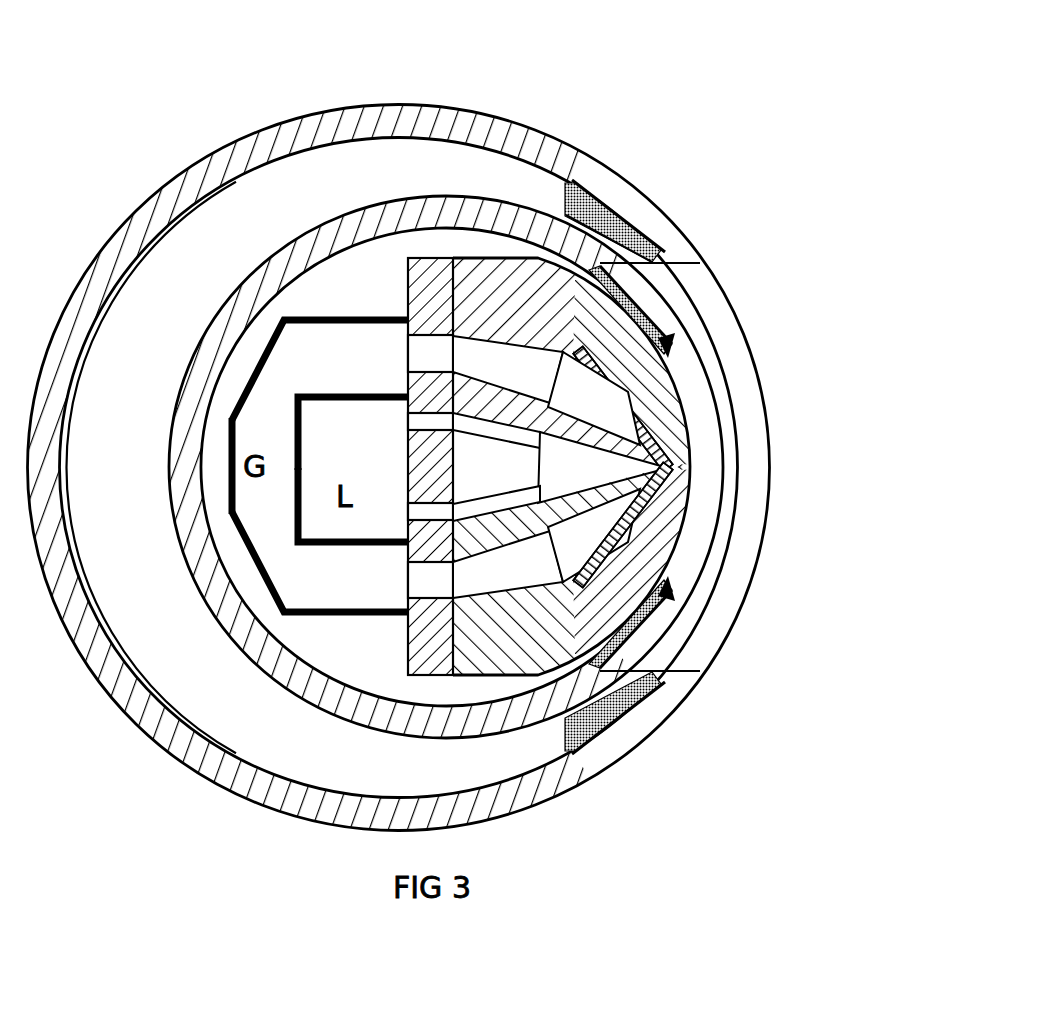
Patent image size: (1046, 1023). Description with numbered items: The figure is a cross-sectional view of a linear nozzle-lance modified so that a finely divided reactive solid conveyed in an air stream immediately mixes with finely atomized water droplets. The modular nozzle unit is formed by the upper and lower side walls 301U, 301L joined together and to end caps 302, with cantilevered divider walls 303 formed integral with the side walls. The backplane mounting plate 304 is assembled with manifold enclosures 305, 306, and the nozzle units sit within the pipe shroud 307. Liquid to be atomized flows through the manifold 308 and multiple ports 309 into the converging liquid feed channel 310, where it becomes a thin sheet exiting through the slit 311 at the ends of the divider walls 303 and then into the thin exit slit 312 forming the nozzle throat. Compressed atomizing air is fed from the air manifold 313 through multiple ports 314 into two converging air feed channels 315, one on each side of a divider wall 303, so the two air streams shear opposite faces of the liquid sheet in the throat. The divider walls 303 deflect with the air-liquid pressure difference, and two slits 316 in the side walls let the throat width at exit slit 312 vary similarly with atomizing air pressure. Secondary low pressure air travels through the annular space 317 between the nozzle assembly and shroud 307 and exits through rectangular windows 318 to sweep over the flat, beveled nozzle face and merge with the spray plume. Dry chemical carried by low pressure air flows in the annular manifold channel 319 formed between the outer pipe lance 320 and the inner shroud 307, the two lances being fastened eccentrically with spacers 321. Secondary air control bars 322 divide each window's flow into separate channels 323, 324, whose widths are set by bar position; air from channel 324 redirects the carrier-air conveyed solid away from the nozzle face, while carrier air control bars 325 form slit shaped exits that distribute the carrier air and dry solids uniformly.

The upper side wall 301U is at (576, 363).
The lower side wall 301L is at (576, 571).
The end caps 302 is at (490, 250).
The divider walls 303 is at (692, 466).
The backplane mounting plate 304 is at (406, 295).
The manifold enclosure 305 is at (400, 392).
The manifold enclosure 306 is at (400, 598).
The pipe shroud 307 is at (172, 412).
The liquid manifold 308 is at (353, 479).
The multiple ports 309 is at (496, 433).
The converging liquid feed channel 310 is at (603, 467).
The slit 311 is at (687, 483).
The exit slit 312 is at (670, 472).
The air manifold 313 is at (320, 370).
The multiple ports 314 is at (508, 369).
The converging air feed channels 315 is at (594, 398).
The slits 316 is at (683, 365).
The annular space 317 is at (322, 637).
The rectangular windows 318 is at (582, 188).
The annular manifold channel 319 is at (96, 508).
The outer pipe lance 320 is at (190, 170).
The spacers 321 is at (530, 197).
The secondary air control bars 322 is at (648, 295).
The channel 323 is at (645, 318).
The channel 324 is at (635, 205).
The carrier air control bars 325 is at (613, 190).